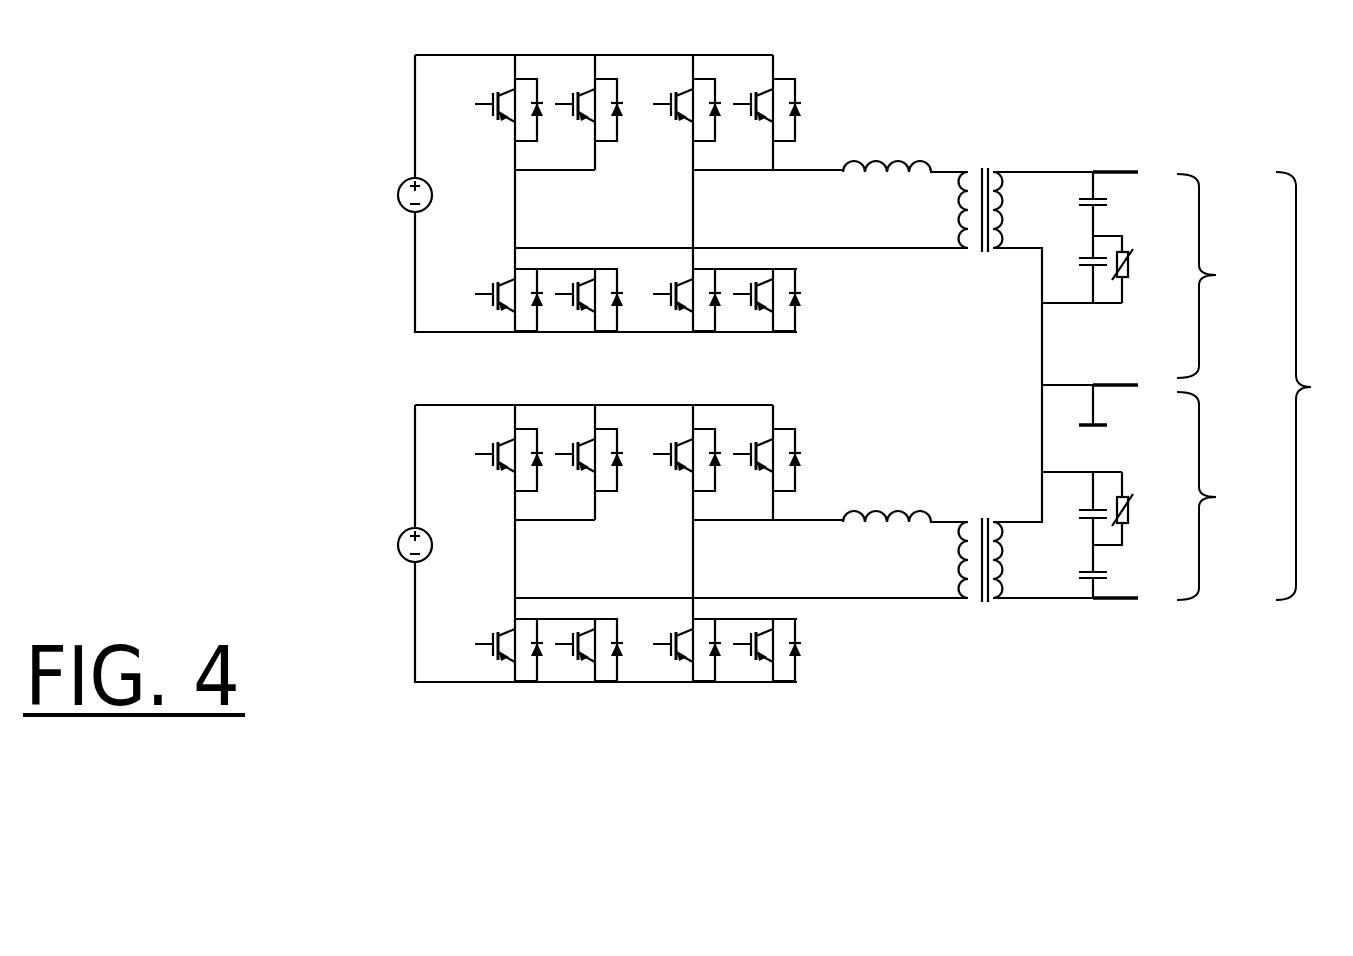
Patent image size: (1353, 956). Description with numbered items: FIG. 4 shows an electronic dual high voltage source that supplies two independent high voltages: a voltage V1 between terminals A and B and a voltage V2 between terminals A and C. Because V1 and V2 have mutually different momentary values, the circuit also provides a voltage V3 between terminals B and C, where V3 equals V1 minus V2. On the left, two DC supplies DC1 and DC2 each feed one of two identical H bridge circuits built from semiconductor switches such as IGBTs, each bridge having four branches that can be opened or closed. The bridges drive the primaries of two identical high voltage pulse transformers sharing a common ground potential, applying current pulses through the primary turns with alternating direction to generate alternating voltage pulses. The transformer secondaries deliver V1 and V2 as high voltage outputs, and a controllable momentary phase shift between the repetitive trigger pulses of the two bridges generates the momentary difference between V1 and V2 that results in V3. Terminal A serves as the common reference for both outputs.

The first DC source DC1 is at (676, 193).
The second DC source DC2 is at (676, 543).
The terminal A is at (1138, 363).
The terminal B is at (1138, 143).
The terminal C is at (1141, 576).
The voltage V1 is at (1215, 276).
The voltage V2 is at (1215, 496).
The voltage V3 is at (1313, 386).